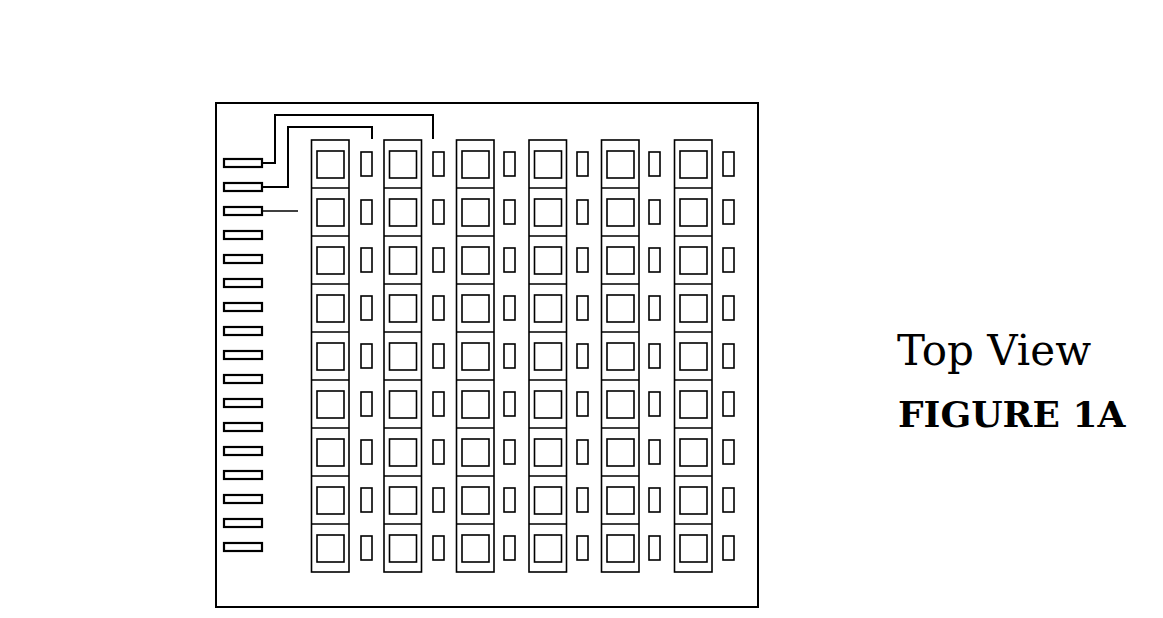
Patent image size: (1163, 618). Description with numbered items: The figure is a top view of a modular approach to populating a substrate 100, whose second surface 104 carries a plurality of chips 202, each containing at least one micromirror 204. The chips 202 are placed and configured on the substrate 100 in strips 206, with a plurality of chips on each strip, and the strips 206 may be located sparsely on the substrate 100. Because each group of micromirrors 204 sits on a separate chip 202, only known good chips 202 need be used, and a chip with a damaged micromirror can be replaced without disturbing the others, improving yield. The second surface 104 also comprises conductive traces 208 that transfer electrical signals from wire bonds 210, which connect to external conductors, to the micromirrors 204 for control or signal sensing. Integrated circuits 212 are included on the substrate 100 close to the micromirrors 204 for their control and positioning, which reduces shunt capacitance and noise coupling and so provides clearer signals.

The substrate 100 is at (500, 324).
The second surface 104 is at (648, 128).
The chip 202 is at (708, 146).
The micromirror 204 is at (695, 170).
The strip 206 is at (470, 140).
The conductive trace 208 is at (273, 127).
The wire bond 210 is at (213, 260).
The integrated circuit 212 is at (735, 258).